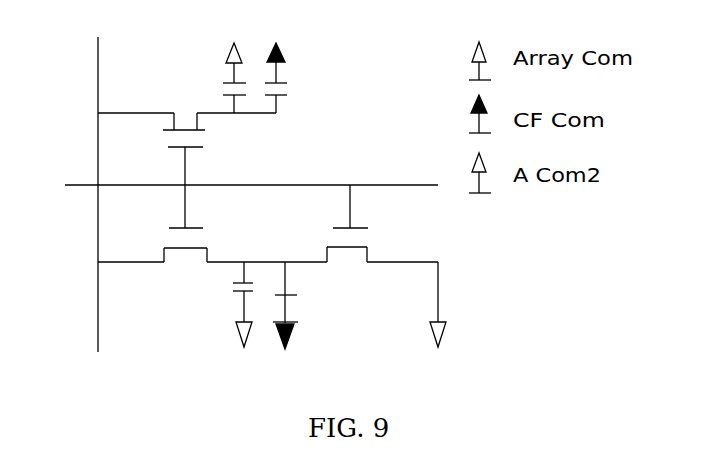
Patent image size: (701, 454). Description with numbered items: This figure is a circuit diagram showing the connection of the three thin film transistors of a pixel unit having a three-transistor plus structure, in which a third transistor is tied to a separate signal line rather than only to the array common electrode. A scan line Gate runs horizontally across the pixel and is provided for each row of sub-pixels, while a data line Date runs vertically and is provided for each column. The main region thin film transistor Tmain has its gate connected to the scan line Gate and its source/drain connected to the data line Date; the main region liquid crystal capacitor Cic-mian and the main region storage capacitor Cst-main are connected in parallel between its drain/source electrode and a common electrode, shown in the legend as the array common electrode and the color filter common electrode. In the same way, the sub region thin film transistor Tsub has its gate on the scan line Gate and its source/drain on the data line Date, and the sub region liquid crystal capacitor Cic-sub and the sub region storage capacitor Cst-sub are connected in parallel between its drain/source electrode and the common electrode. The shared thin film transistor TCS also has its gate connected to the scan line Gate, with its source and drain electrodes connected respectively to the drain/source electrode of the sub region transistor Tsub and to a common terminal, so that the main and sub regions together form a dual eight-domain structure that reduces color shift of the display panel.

The data line Date is at (128, 182).
The scan line Gate is at (225, 166).
The main region thin film transistor Tmain is at (164, 170).
The sub region thin film transistor Tsub is at (163, 239).
The shared thin film transistor TCS is at (386, 266).
The main region storage capacitor Cst-main is at (199, 79).
The main region liquid crystal capacitor Cic-mian is at (319, 79).
The sub region storage capacitor Cst-sub is at (199, 304).
The sub region liquid crystal capacitor Cic-sub is at (323, 305).